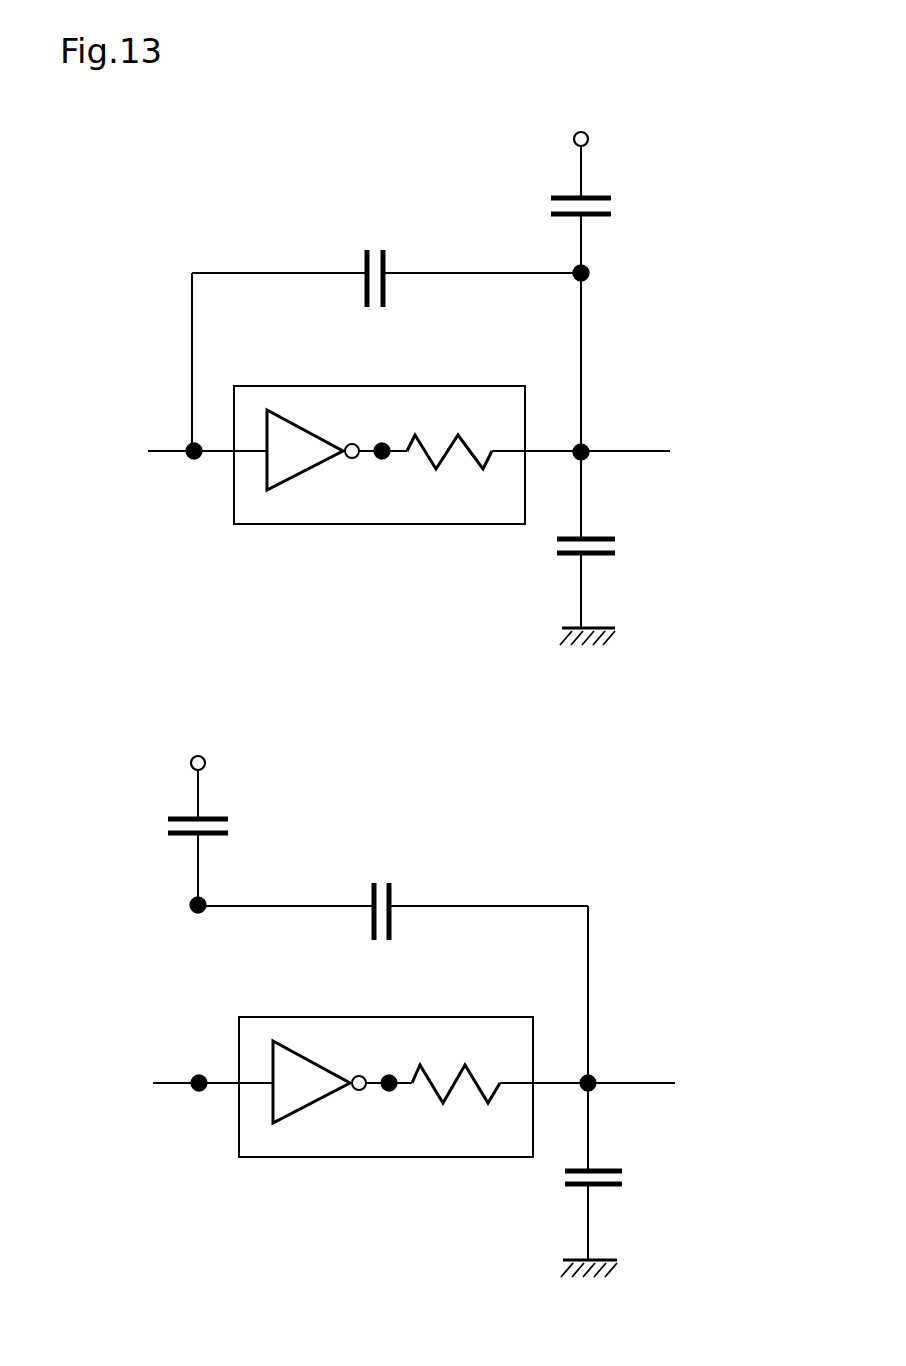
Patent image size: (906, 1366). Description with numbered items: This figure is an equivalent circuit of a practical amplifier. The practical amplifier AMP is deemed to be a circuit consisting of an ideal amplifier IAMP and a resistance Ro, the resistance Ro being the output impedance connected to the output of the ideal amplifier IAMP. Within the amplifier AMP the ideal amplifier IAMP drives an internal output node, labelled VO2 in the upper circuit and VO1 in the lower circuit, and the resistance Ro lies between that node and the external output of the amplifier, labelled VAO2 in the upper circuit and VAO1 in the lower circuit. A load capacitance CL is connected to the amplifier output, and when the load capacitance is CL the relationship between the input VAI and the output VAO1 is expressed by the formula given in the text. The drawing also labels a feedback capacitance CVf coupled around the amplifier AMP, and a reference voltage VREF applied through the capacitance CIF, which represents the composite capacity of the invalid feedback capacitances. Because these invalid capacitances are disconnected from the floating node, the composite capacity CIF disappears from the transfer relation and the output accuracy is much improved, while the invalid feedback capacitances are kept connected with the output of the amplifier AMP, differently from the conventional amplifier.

The reference voltage terminal VREF is at (404, 456).
The composite capacity of the invalid feedback capacitances CIF is at (366, 537).
The feedback capacitor CVf is at (389, 646).
The input VAI is at (156, 760).
The amplifier AMP is at (375, 794).
The ideal amplifier IAMP is at (302, 476).
The amplifier output node 2 VO2 is at (384, 442).
The amplifier output node 1 VO1 is at (391, 1074).
The resistance Ro is at (442, 463).
The amplifier output 2 VAO2 is at (629, 406).
The output VAO1 is at (637, 1116).
The load capacitance CL is at (620, 907).